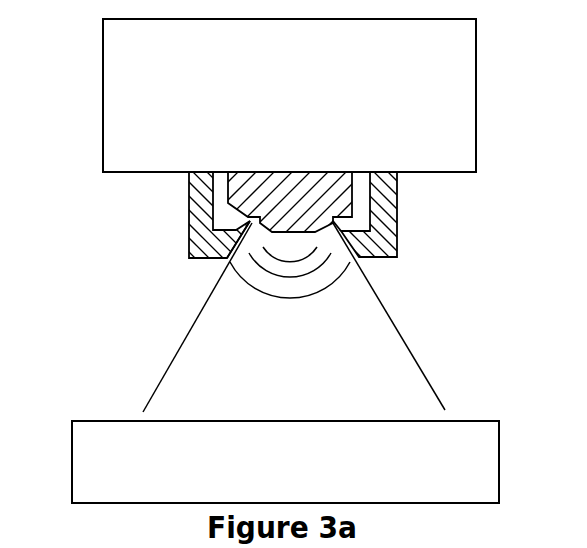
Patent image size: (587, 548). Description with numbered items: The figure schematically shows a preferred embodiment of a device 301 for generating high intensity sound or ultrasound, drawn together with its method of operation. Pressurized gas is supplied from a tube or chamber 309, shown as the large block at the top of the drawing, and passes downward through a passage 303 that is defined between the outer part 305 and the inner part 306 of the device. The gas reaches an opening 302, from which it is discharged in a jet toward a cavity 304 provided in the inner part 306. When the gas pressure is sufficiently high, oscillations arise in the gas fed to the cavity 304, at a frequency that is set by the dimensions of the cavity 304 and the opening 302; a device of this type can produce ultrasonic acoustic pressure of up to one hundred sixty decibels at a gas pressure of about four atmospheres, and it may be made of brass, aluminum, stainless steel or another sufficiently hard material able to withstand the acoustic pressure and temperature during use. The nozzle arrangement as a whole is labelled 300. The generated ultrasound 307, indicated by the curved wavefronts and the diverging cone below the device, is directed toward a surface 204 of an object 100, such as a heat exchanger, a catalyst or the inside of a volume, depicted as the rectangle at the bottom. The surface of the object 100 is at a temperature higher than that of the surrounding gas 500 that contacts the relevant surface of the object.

The object 100 is at (133, 497).
The surface 204 is at (217, 420).
The nozzle assembly 300 is at (478, 205).
The device 301 is at (295, 171).
The opening 302 is at (244, 220).
The passage 303 is at (219, 178).
The cavity 304 is at (228, 264).
The outer part 305 is at (383, 185).
The inner part 306 is at (288, 185).
The generated ultrasound 307 is at (404, 326).
The tube or chamber 309 is at (120, 86).
The gas 500 is at (131, 328).